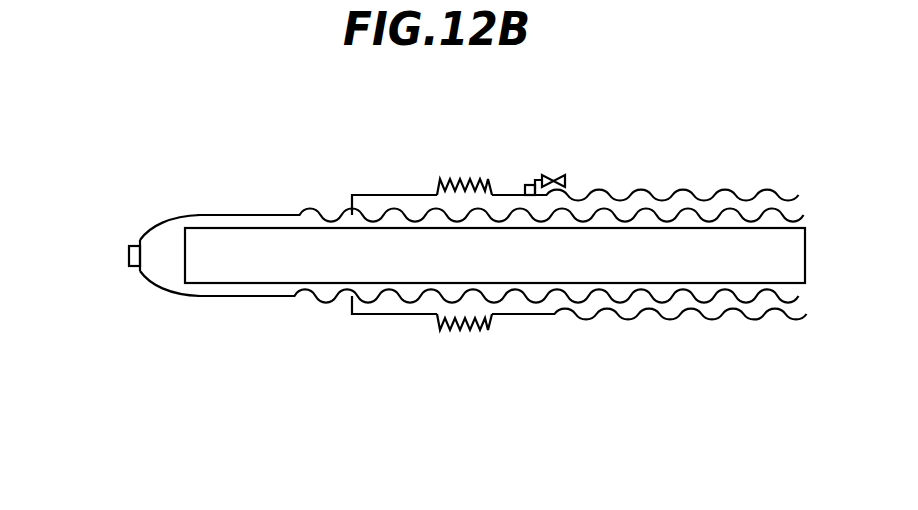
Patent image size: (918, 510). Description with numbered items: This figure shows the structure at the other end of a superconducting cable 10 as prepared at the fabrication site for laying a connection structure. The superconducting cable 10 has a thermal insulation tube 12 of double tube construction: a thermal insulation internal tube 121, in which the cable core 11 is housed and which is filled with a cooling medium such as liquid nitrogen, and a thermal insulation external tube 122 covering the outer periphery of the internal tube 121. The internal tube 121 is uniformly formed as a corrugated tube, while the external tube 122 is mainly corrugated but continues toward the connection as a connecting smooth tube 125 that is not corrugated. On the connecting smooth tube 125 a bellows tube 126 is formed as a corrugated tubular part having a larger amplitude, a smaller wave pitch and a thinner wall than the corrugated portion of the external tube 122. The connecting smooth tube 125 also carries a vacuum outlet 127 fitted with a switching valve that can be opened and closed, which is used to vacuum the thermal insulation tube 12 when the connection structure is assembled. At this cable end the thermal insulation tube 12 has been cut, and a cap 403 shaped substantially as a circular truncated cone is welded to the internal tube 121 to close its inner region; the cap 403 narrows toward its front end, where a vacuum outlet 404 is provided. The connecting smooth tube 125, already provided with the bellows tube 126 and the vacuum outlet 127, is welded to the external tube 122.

The superconducting cable 10 is at (686, 436).
The cable core 11 is at (708, 283).
The thermal insulation tube 12 is at (640, 396).
The thermal insulation internal tube 121 is at (568, 291).
The thermal insulation external tube 122 is at (630, 315).
The connecting smooth tube 125 is at (390, 195).
The bellows tube 126 is at (468, 182).
The vacuum outlet 127 is at (542, 182).
The cap 403 is at (188, 216).
The vacuum outlet 404 is at (136, 244).